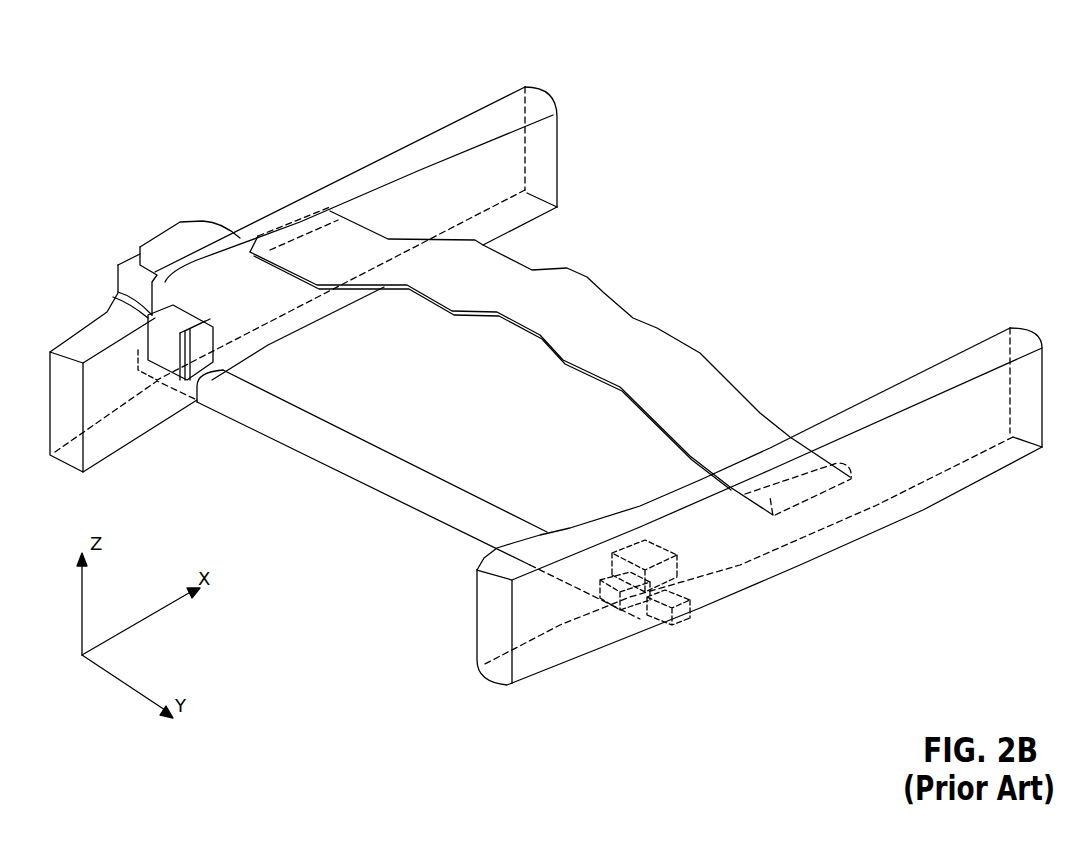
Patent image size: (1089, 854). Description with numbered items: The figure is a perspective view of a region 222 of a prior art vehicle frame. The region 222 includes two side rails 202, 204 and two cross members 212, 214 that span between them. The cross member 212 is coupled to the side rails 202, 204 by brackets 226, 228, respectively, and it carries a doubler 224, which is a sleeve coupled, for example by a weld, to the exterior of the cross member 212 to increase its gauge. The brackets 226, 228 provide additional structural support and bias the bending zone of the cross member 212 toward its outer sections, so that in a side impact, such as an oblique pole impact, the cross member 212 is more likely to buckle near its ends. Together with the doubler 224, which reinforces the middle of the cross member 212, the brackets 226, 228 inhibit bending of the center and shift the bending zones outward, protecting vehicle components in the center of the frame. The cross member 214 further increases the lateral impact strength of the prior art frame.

The side rail 202 is at (508, 93).
The side rail 204 is at (880, 533).
The cross member 212 is at (457, 543).
The cross member 214 is at (587, 273).
The region 222 is at (785, 63).
The doubler 224 is at (265, 381).
The bracket 226 is at (117, 292).
The bracket 228 is at (633, 603).